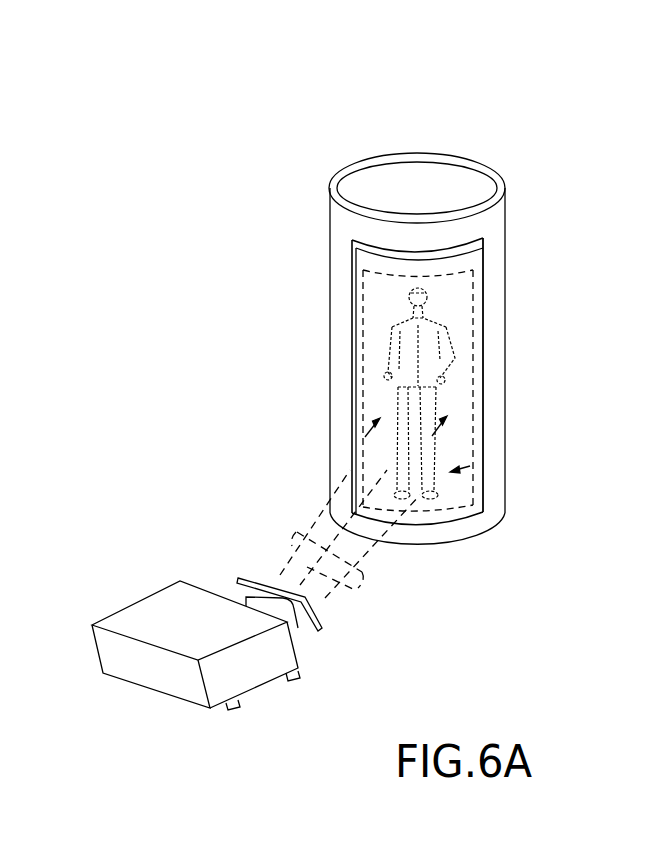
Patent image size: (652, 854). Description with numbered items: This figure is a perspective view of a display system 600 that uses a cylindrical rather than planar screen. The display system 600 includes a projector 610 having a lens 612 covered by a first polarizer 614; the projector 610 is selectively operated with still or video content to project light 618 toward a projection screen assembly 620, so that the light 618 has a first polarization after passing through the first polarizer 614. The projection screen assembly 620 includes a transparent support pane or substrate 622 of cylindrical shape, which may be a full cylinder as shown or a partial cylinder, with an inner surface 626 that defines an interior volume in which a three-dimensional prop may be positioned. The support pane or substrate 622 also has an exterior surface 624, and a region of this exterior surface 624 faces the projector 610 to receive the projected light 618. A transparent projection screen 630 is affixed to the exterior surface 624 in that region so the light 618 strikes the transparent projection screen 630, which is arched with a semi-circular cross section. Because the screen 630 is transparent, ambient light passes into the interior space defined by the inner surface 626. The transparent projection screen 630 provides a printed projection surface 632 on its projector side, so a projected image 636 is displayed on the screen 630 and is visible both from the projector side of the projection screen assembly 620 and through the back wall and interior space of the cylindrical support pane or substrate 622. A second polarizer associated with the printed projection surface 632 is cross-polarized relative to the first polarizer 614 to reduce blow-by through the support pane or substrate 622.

The display system 600 is at (268, 210).
The projector 610 is at (258, 683).
The lens 612 is at (245, 600).
The first polarizer 614 is at (313, 623).
The light 618 is at (353, 583).
The projection screen assembly 620 is at (558, 158).
The support pane or substrate 622 is at (507, 222).
The exterior surface 624 is at (497, 308).
The inner surface 626 is at (455, 178).
The transparent projection screen 630 is at (492, 537).
The printed projection surface 632 is at (485, 513).
The projected image 636 is at (473, 467).